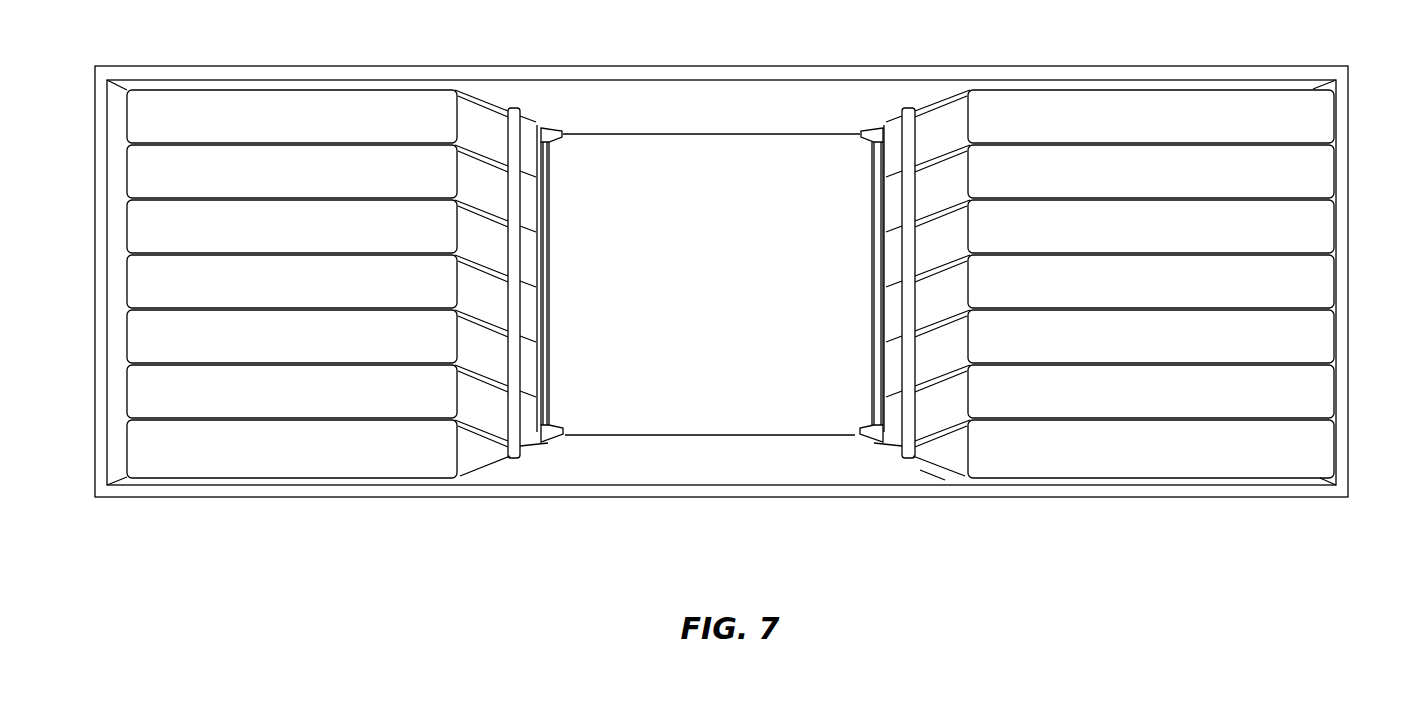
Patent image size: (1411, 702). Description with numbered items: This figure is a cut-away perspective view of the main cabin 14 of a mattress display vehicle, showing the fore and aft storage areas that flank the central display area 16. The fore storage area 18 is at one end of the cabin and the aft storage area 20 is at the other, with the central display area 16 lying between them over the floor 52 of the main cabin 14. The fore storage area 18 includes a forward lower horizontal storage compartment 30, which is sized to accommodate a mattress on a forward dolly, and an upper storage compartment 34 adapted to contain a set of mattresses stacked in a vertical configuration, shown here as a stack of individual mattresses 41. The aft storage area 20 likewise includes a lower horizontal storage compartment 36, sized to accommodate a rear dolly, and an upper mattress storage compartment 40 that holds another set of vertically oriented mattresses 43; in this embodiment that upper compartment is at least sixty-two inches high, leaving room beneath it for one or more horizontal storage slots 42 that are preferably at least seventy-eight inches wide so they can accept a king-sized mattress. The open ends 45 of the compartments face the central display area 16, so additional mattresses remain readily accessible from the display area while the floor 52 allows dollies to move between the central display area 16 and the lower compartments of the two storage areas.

The main cabin 14 is at (928, 93).
The central display area 16 is at (719, 152).
The fore storage area 18 is at (357, 445).
The aft storage area 20 is at (1125, 447).
The forward lower horizontal storage compartment 30 is at (553, 153).
The upper storage compartment 34 is at (478, 123).
The lower horizontal storage compartment 36 is at (858, 148).
The upper mattress storage compartment 40 is at (930, 473).
The tray 41 is at (135, 176).
The horizontal storage slot 42 is at (528, 137).
The tray 43 is at (1300, 176).
The open ends 45 is at (892, 240).
The floor 52 is at (718, 418).